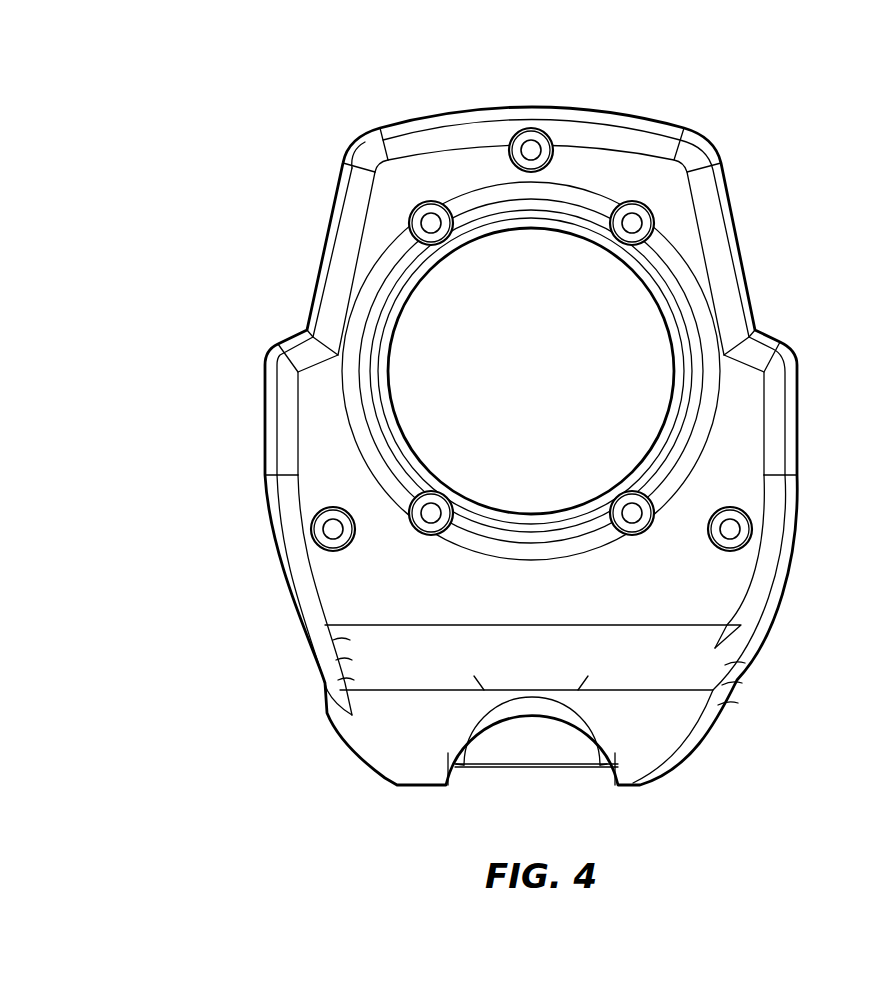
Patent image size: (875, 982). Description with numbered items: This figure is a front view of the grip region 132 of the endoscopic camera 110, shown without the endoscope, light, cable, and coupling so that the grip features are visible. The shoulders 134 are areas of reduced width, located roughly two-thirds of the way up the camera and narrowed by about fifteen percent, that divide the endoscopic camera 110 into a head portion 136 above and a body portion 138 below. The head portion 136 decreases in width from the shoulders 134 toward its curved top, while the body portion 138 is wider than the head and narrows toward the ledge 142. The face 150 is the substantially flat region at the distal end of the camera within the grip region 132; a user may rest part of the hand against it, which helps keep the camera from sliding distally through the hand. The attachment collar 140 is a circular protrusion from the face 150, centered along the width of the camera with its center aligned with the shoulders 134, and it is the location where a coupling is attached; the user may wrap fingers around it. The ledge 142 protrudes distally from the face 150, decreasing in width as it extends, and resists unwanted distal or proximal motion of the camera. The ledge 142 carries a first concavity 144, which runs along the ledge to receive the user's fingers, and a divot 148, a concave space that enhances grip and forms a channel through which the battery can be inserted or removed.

The endoscopic camera 110 is at (378, 66).
The grip region 132 is at (754, 146).
The shoulders 134 is at (752, 356).
The head portion 136 is at (310, 246).
The body portion 138 is at (243, 431).
The attachment collar 140 is at (668, 266).
The ledge 142 is at (668, 735).
The first concavity 144 is at (628, 657).
The divot 148 is at (455, 732).
The face 150 is at (347, 578).